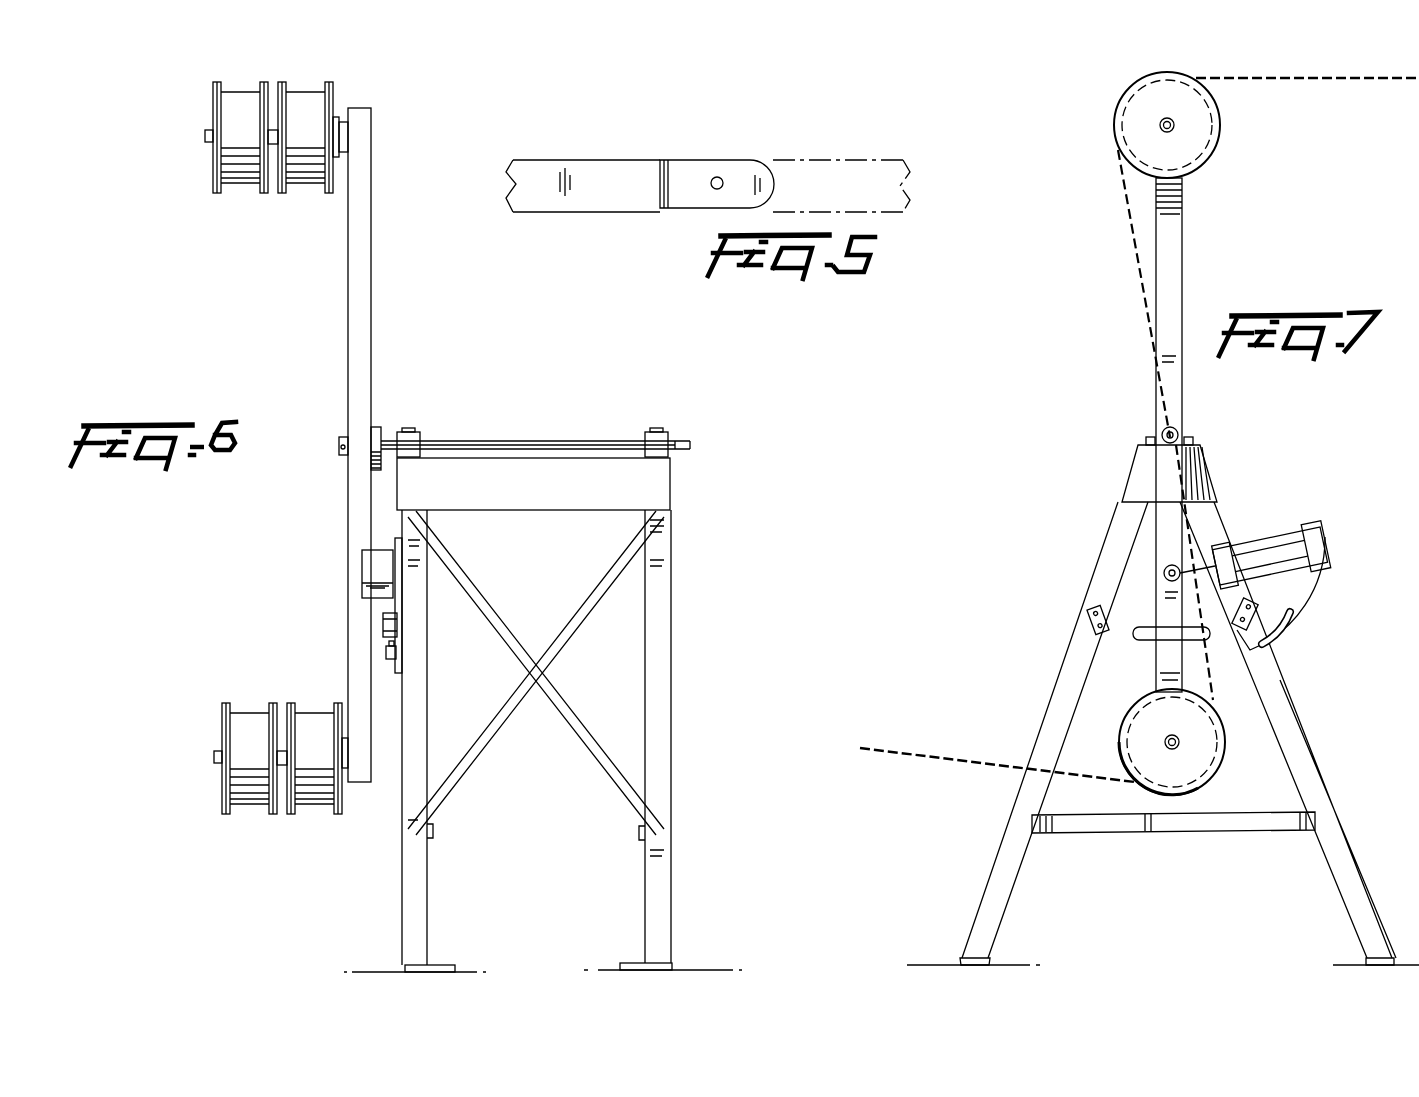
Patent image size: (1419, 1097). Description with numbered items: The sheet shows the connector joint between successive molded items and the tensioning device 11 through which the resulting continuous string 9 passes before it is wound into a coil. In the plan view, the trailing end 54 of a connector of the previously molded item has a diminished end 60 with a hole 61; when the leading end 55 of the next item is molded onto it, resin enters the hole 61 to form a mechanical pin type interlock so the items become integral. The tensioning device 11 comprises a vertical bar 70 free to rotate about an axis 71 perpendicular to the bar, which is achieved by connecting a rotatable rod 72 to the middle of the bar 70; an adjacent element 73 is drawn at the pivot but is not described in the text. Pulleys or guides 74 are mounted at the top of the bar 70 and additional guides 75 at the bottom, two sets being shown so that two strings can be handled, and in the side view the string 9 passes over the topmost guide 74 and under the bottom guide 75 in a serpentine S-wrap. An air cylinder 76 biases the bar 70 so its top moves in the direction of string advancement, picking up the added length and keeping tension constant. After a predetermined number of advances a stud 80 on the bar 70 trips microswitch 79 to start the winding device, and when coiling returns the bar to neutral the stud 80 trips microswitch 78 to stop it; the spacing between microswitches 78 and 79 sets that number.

In FIG. 7, the continuous string 9 is at (1285, 82).
In FIG. 6, the tensioning device 11 is at (470, 402).
In FIG. 7, the tensioning device 11 is at (1245, 497).
In FIG. 5, the trailing end 54 is at (585, 160).
In FIG. 5, the leading end 55 is at (845, 160).
In FIG. 5, the diminished end 60 is at (710, 200).
In FIG. 5, the hole 61 is at (723, 181).
In FIG. 6, the bar 70 is at (357, 296).
In FIG. 7, the bar 70 is at (1182, 243).
In FIG. 6, the axis 71 is at (339, 455).
In FIG. 7, the axis 71 is at (1160, 447).
In FIG. 6, the rotatable rod 72 is at (478, 440).
In FIG. 7, the rotatable rod 72 is at (1182, 432).
In FIG. 6, the bearing hub 73 is at (368, 440).
In FIG. 7, the bearing hub 73 is at (1166, 458).
In FIG. 6, the pulleys or guides 74 is at (243, 182).
In FIG. 7, the pulleys or guides 74 is at (1200, 135).
In FIG. 6, the additional guides 75 is at (255, 790).
In FIG. 7, the additional guides 75 is at (1208, 750).
In FIG. 6, the air cylinder 76 is at (362, 590).
In FIG. 7, the air cylinder 76 is at (1275, 552).
In FIG. 7, the microswitch 78 is at (1093, 620).
In FIG. 6, the microswitch 79 is at (394, 627).
In FIG. 7, the microswitch 79 is at (1255, 612).
In FIG. 6, the stud 80 is at (380, 636).
In FIG. 7, the stud 80 is at (1140, 640).